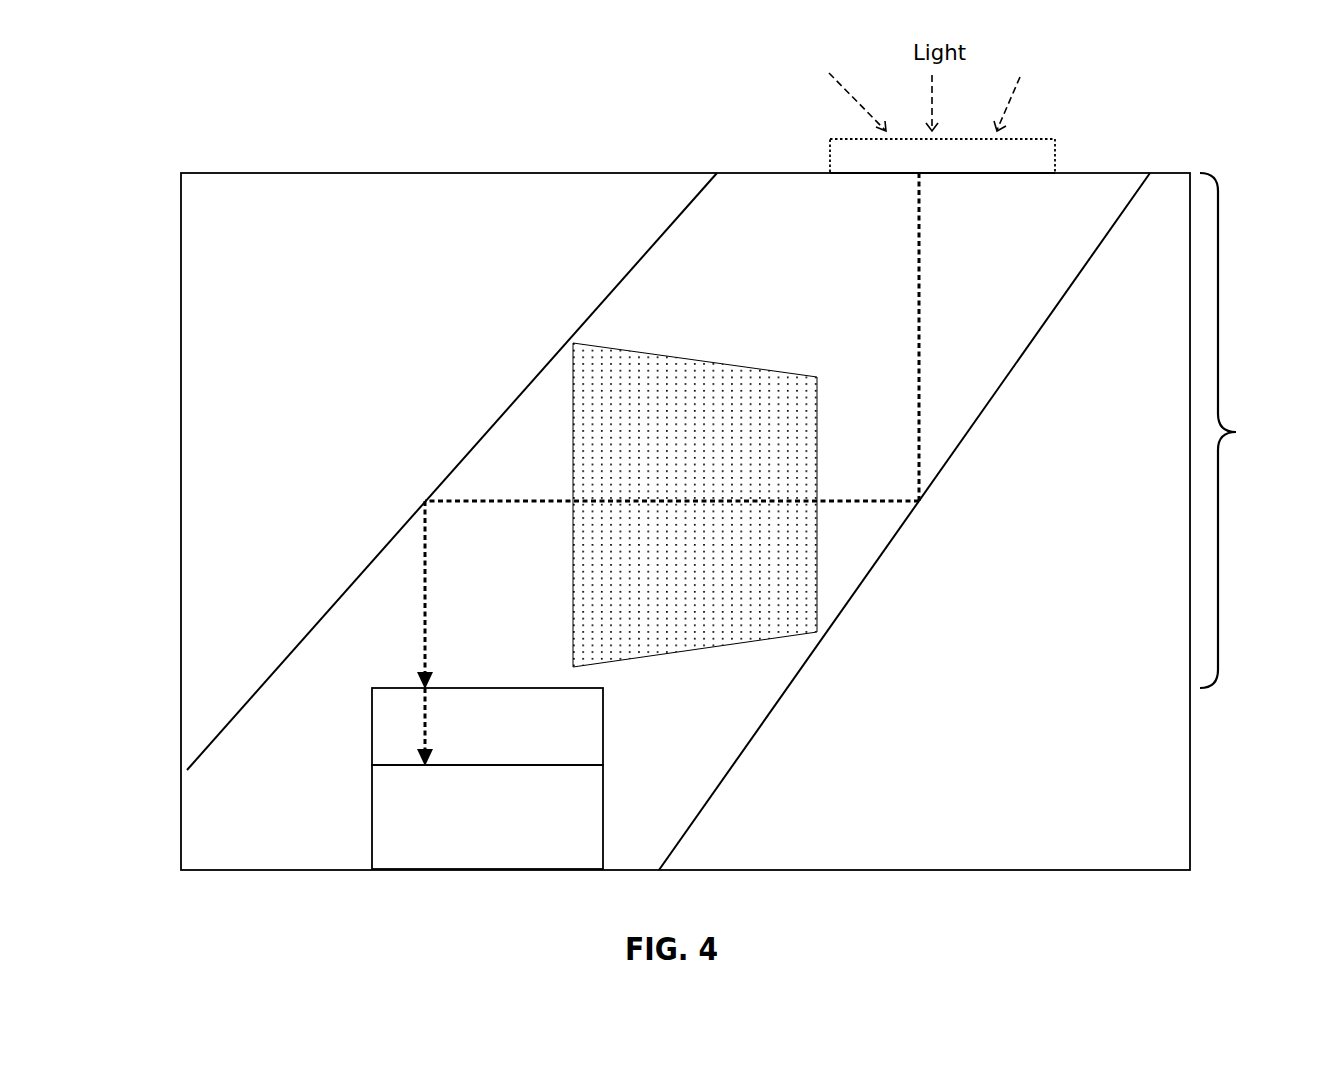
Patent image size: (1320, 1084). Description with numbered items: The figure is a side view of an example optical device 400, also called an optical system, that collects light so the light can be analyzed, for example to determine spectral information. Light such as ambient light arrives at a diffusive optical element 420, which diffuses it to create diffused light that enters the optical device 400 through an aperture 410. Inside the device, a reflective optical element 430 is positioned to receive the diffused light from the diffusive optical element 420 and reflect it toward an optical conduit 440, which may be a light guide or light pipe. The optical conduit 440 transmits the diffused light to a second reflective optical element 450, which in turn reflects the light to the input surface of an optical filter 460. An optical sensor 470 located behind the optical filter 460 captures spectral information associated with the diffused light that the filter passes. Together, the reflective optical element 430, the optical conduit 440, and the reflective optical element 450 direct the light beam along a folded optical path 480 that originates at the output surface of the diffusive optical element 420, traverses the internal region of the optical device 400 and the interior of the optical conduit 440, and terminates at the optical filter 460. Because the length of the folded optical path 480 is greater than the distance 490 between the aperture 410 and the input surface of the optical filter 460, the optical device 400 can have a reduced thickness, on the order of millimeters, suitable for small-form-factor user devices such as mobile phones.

The optical device 400 is at (232, 163).
The aperture 410 is at (880, 178).
The diffusive optical element 420 is at (960, 169).
The reflective optical element 430 is at (958, 666).
The optical conduit 440 is at (701, 359).
The reflective optical element 450 is at (418, 252).
The optical filter 460 is at (505, 737).
The optical sensor 470 is at (505, 829).
The folded optical path 480 is at (426, 619).
The distance 490 is at (1243, 430).